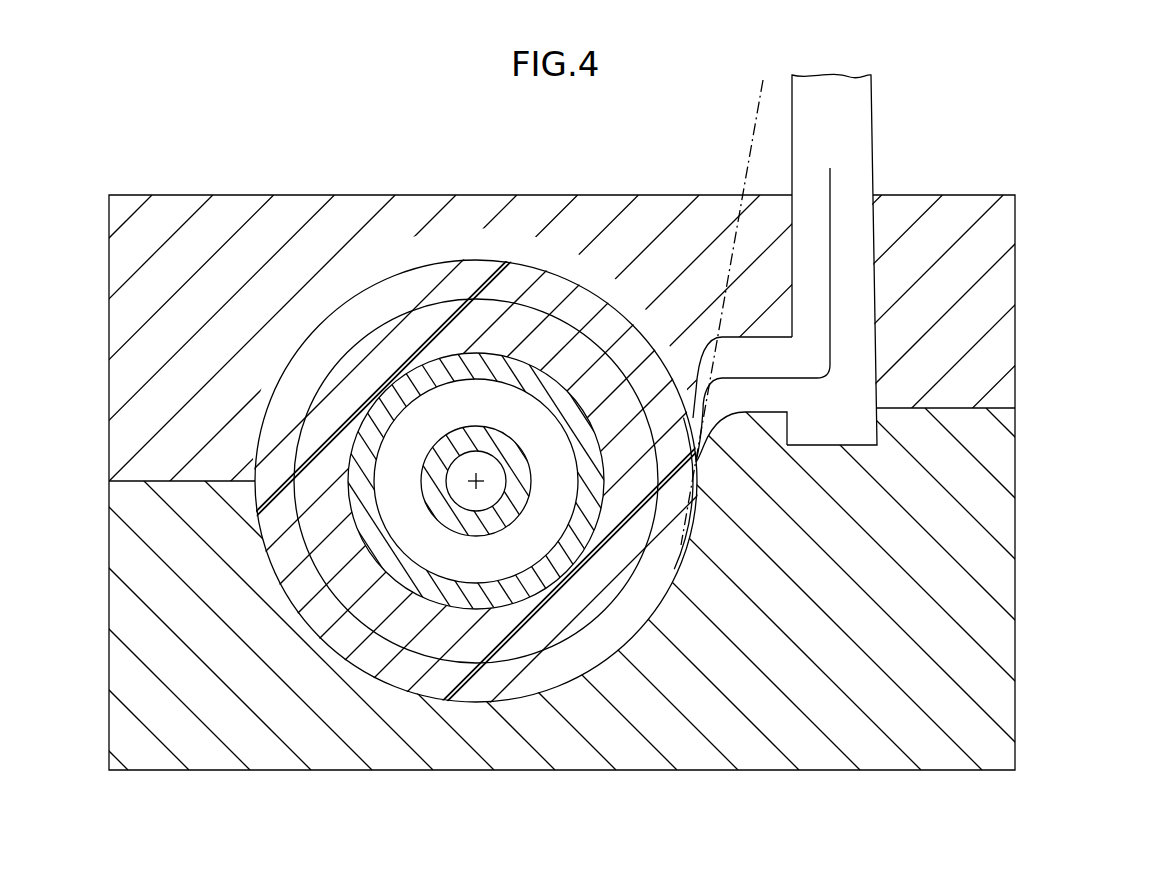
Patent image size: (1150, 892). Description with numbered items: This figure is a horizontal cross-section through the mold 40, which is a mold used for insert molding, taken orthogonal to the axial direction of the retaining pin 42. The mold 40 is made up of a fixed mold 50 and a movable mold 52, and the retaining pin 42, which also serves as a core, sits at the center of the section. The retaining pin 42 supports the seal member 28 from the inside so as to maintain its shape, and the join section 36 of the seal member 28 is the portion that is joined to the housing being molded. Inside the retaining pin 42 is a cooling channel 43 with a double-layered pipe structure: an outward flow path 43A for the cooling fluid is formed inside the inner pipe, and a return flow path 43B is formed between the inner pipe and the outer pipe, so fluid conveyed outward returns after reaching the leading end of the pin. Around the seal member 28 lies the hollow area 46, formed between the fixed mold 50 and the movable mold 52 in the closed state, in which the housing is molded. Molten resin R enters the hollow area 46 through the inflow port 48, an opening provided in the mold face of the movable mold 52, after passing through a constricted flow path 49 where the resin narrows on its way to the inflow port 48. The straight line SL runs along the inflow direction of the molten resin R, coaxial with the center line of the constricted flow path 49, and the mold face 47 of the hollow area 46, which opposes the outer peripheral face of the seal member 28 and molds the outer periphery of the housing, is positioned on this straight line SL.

The mold 40 is at (1040, 193).
The fixed mold 50 is at (1015, 289).
The movable mold 52 is at (1015, 573).
The molten resin R is at (832, 188).
The straight line SL is at (750, 130).
The constricted flow path 49 is at (704, 418).
The inflow port 48 is at (700, 466).
The mold face 47 is at (607, 650).
The hollow area 46 is at (395, 300).
The join section 36 is at (495, 300).
The seal member 28 is at (495, 300).
The retaining pin 42 is at (511, 604).
The cooling channel 43 is at (518, 817).
The outward flow path 43A is at (463, 490).
The return flow path 43B is at (485, 555).